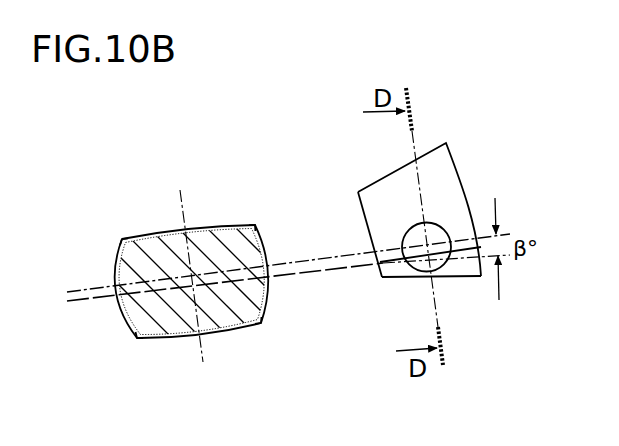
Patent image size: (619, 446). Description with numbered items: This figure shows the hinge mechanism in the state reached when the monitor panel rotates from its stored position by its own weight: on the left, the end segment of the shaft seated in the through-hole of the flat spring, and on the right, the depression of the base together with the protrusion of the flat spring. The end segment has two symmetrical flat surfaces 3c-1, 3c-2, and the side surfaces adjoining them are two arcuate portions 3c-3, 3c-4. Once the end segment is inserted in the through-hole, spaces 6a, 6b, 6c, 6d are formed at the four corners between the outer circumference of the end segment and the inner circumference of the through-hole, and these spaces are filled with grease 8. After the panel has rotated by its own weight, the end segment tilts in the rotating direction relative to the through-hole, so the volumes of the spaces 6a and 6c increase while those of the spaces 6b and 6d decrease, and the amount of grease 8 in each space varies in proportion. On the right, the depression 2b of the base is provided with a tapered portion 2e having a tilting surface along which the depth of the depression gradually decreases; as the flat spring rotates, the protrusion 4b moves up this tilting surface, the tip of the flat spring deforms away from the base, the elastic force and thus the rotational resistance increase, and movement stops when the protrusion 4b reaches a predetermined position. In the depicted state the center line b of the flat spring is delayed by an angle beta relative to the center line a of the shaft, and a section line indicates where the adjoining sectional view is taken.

The grease 8 is at (189, 286).
The flat surface 3c-1 is at (209, 229).
The flat surface 3c-2 is at (160, 340).
The arcuate portion 3c-3 is at (271, 293).
The arcuate portion 3c-4 is at (121, 318).
The space 6a is at (258, 228).
The space 6b is at (263, 323).
The space 6c is at (133, 339).
The space 6d is at (120, 242).
The depression 2b is at (425, 219).
The tapered portion 2e is at (401, 276).
The protrusion 4b is at (410, 228).
The center line of the shaft a is at (371, 266).
The center line of the flat spring b is at (333, 258).